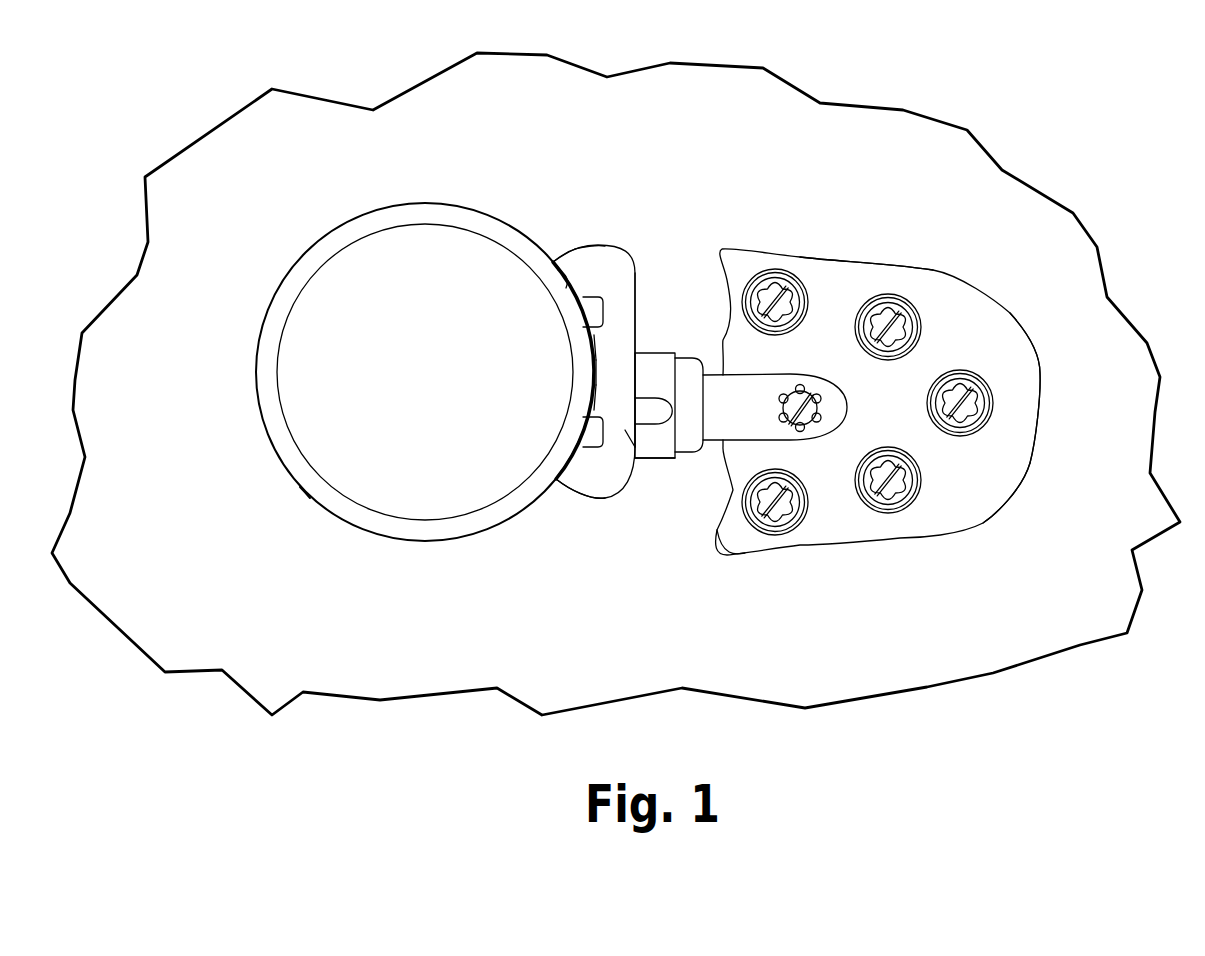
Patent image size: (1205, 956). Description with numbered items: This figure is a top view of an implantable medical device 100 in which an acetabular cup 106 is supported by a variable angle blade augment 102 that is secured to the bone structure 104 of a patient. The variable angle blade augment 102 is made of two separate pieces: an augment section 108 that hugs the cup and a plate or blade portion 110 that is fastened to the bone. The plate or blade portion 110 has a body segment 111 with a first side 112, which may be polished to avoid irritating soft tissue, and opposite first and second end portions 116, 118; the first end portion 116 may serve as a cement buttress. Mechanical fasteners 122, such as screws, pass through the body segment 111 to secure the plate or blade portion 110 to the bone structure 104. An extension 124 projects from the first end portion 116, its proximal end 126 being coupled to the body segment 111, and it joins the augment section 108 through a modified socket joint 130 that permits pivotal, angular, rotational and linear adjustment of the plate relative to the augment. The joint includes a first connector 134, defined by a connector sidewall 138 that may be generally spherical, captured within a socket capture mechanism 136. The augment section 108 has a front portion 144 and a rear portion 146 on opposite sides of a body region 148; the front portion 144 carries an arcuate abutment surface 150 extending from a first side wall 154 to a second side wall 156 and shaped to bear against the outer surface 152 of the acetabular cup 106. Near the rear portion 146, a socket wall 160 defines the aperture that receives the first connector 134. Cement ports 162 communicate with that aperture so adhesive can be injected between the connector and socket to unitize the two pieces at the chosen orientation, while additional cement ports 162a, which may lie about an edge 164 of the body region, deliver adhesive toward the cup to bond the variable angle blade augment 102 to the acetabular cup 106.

The implantable medical device 100 is at (568, 115).
The variable angle blade augment 102 is at (662, 590).
The bone structure 104 is at (955, 182).
The acetabular cup 106 is at (401, 348).
The augment section 108 is at (515, 345).
The plate or blade portion 110 is at (875, 414).
The body segment 111 is at (993, 367).
The first side 112 is at (904, 283).
The first end portion 116 is at (720, 555).
The second end portion 118 is at (1020, 484).
The mechanical fasteners 122 is at (880, 320).
The extension 124 is at (757, 417).
The proximal end 126 is at (830, 379).
The modified socket joint 130 is at (630, 422).
The first connector 134 is at (661, 486).
The socket capture mechanism 136 is at (658, 356).
The connector sidewall 138 is at (687, 388).
The front portion 144 is at (565, 262).
The rear portion 146 is at (634, 265).
The body region 148 is at (600, 385).
The abutment surface 150 is at (592, 395).
The outer surface 152 is at (300, 487).
The first side wall 154 is at (585, 252).
The second side wall 156 is at (584, 498).
The socket wall 160 is at (640, 443).
The cement ports 162 is at (495, 374).
The cement ports 162a is at (597, 312).
The edge 164 is at (607, 347).